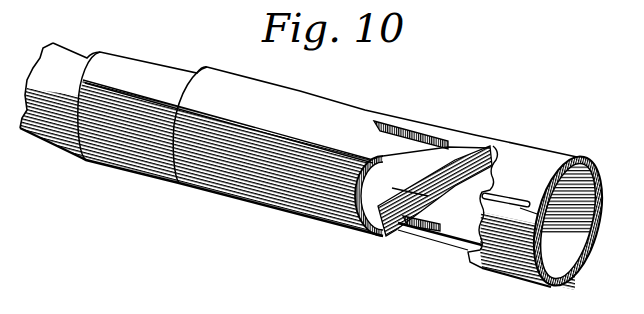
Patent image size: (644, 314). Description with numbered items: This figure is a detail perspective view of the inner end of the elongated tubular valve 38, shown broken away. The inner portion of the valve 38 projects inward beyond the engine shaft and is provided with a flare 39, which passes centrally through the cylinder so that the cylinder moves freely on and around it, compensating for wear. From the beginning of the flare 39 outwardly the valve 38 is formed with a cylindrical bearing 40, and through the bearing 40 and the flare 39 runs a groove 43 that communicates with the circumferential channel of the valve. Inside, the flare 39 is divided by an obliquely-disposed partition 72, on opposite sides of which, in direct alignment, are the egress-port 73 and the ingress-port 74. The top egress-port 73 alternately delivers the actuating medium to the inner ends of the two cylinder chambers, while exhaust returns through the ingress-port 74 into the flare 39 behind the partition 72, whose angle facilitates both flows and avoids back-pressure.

The elongated tubular valve 38 is at (91, 56).
The flare 39 is at (350, 109).
The cylindrical bearing 40 is at (187, 59).
The groove 43 is at (223, 125).
The obliquely-disposed partition 72 is at (477, 148).
The egress-port 73 is at (437, 133).
The ingress-port 74 is at (467, 245).